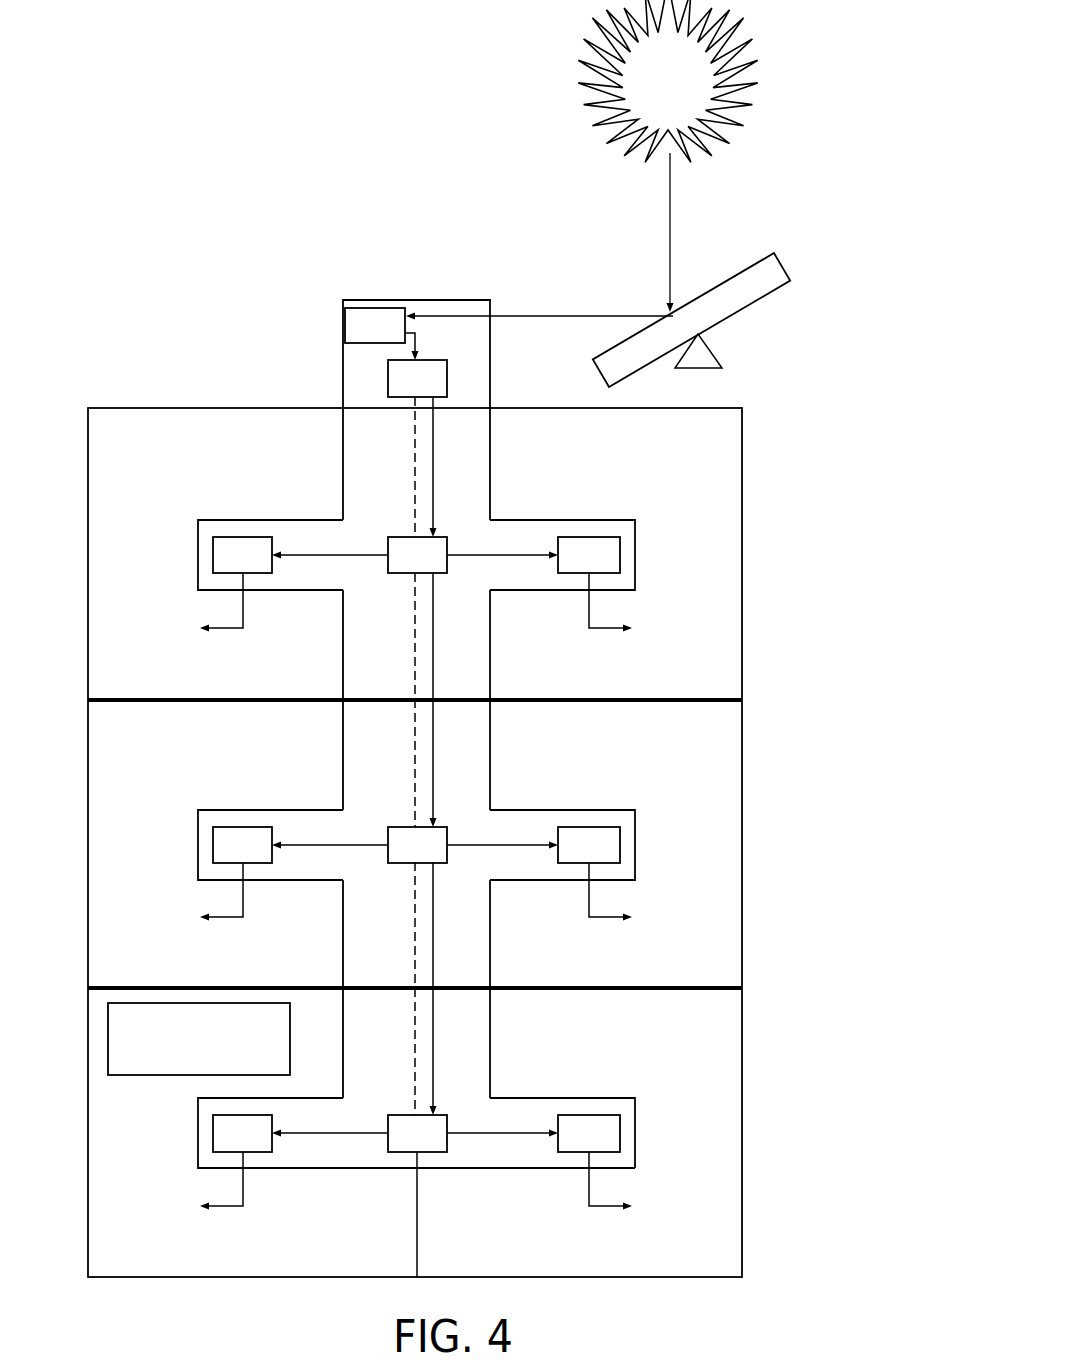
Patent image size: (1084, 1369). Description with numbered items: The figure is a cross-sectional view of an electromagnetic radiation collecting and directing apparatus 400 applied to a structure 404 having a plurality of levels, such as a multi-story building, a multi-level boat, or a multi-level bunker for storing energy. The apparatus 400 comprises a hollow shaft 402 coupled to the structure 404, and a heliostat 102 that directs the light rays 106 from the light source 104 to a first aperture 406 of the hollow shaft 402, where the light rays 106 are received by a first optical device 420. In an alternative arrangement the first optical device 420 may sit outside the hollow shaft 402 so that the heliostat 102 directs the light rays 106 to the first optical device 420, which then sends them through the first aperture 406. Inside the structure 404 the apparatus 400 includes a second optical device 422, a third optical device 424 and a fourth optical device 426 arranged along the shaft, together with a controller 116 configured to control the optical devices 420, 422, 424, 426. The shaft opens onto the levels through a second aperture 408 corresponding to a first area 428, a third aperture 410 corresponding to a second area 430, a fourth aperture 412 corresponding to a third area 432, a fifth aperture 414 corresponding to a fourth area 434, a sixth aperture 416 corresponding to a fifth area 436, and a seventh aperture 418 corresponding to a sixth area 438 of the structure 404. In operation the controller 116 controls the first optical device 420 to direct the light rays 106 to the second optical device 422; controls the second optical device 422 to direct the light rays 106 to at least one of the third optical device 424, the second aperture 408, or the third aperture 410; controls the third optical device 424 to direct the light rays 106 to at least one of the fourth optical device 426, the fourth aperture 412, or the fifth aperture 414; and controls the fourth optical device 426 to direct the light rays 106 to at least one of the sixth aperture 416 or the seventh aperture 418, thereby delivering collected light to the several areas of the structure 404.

The electromagnetic radiation collecting and directing apparatus 400 is at (498, 638).
The light source 104 is at (667, 156).
The heliostat 102 is at (751, 287).
The light rays 106 is at (539, 279).
The hollow shaft 402 is at (428, 660).
The first aperture 406 is at (375, 325).
The first optical device 420 is at (417, 378).
The structure 404 is at (476, 837).
The second optical device 422 is at (417, 555).
The third optical device 424 is at (417, 845).
The fourth optical device 426 is at (417, 1133).
The second aperture 408 is at (242, 555).
The third aperture 410 is at (589, 555).
The fourth aperture 412 is at (242, 845).
The fifth aperture 414 is at (589, 845).
The sixth aperture 416 is at (242, 1133).
The seventh aperture 418 is at (589, 1133).
The first area 428 is at (255, 593).
The second area 430 is at (573, 592).
The third area 432 is at (255, 880).
The fourth area 434 is at (578, 883).
The fifth area 436 is at (371, 1130).
The sixth area 438 is at (573, 1175).
The controller 116 is at (199, 1039).